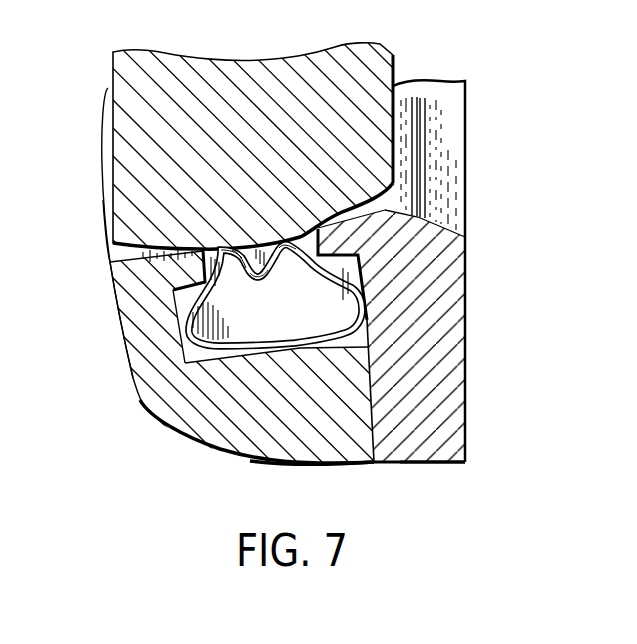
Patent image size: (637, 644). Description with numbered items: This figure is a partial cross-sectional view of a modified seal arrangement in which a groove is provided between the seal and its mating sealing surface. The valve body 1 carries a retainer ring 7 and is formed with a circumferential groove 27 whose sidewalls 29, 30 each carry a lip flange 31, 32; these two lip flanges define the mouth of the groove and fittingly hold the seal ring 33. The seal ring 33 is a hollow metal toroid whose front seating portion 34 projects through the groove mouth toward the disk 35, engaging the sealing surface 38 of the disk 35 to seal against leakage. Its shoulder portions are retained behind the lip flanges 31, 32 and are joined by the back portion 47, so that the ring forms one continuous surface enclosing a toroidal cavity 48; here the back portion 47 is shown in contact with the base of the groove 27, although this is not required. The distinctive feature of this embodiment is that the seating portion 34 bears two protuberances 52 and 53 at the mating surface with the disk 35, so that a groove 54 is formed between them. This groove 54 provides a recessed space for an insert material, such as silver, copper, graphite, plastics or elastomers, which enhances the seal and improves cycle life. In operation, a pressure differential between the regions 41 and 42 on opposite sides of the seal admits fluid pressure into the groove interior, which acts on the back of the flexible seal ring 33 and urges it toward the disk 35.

The valve body 1 is at (281, 450).
The retainer ring 7 is at (421, 455).
The groove 27 is at (213, 369).
The sidewall 29 is at (178, 312).
The sidewall 30 is at (363, 331).
The lip flange 31 is at (178, 289).
The lip flange 32 is at (337, 242).
The seal ring 33 is at (205, 229).
The seating portion 34 is at (255, 242).
The disk 35 is at (237, 80).
The sealing surface 38 is at (368, 212).
The region 41 is at (122, 263).
The region 42 is at (452, 123).
The back portion 47 is at (290, 346).
The toroidal cavity 48 is at (262, 336).
The protuberance 52 is at (217, 244).
The protuberance 53 is at (300, 233).
The groove 54 is at (270, 244).